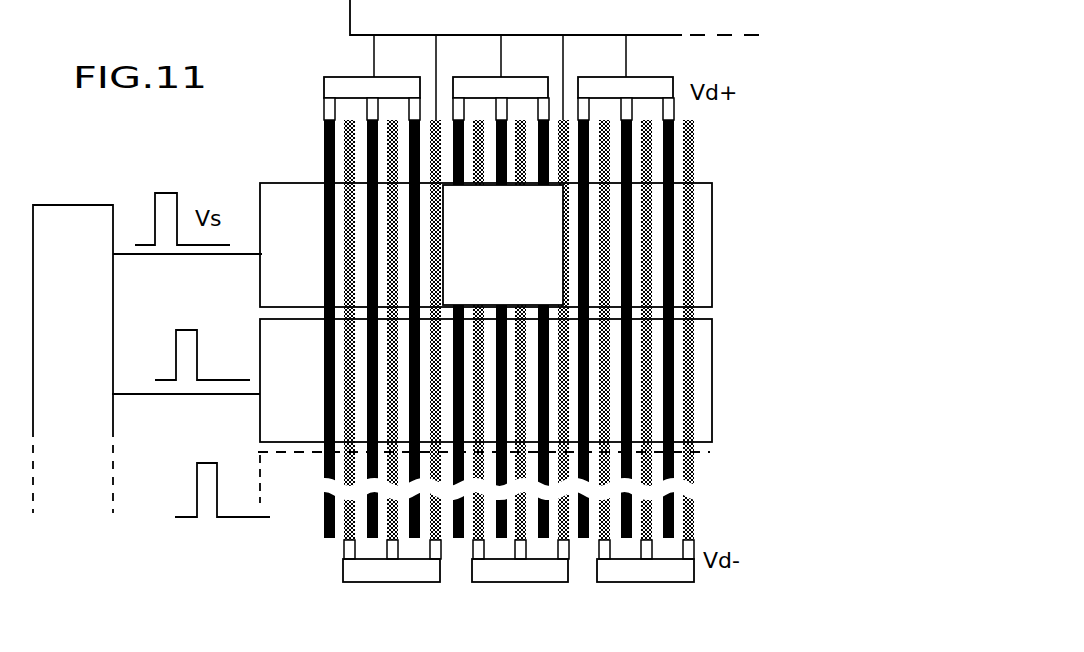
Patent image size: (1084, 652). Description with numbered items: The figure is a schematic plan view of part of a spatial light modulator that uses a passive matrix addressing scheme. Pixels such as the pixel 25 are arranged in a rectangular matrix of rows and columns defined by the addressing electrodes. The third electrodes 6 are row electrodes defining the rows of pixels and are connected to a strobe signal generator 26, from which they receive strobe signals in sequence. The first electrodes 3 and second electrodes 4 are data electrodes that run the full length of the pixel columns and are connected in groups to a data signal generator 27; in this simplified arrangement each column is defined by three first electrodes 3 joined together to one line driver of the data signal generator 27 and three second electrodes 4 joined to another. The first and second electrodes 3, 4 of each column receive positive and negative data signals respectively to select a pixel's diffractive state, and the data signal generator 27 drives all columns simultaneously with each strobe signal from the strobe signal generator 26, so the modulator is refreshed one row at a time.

The data signal generator 27 is at (350, 16).
The strobe signal generator 26 is at (113, 204).
The first electrode 3 is at (323, 143).
The second electrode 4 is at (693, 145).
The third electrode 6 is at (283, 193).
The pixel 25 is at (567, 255).